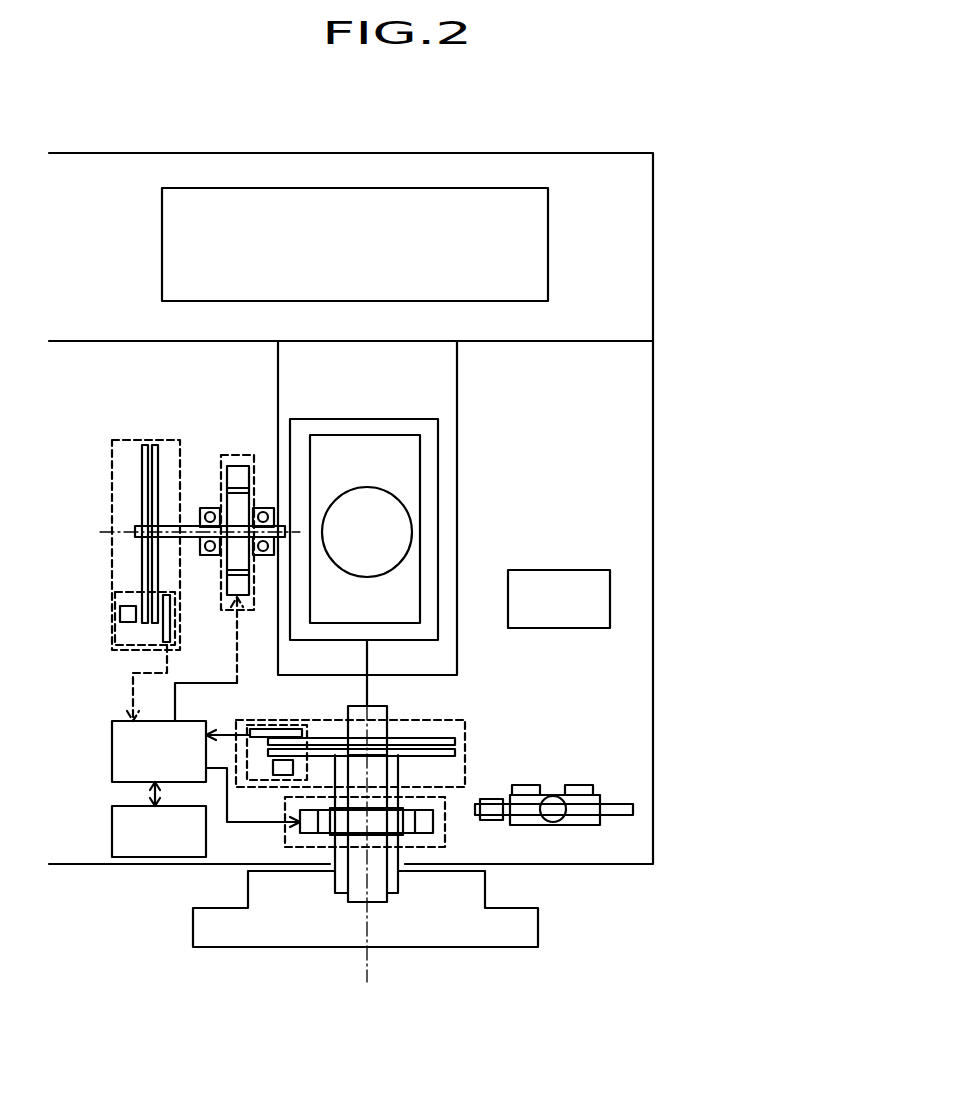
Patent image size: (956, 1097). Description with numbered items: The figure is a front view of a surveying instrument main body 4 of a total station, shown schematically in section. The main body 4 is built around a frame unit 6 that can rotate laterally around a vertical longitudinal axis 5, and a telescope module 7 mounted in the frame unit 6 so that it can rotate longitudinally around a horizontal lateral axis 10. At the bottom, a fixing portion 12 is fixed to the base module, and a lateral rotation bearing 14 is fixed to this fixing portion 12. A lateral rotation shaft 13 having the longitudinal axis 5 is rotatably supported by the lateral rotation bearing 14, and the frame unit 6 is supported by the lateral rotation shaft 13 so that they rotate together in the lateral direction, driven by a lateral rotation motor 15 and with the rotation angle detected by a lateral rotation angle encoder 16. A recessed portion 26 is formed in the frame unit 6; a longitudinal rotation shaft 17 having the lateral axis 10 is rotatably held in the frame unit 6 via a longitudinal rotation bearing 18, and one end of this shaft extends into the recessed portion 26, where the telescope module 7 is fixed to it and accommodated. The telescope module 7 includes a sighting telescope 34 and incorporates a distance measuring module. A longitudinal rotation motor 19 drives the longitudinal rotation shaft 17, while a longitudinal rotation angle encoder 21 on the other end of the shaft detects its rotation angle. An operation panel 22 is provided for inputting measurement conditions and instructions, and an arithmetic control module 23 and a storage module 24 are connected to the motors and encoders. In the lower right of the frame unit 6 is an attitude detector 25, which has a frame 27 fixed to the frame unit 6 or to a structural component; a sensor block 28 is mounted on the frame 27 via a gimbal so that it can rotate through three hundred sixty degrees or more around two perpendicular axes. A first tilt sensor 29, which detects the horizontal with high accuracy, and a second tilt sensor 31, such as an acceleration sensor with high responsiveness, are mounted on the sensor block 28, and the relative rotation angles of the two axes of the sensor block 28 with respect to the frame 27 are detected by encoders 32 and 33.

The surveying instrument main body 4 is at (665, 543).
The longitudinal axis 5 is at (365, 688).
The frame unit 6 is at (653, 420).
The telescope module 7 is at (400, 418).
The lateral axis 10 is at (120, 530).
The fixing portion 12 is at (538, 925).
The lateral rotation shaft 13 is at (388, 730).
The lateral rotation bearing 14 is at (397, 880).
The lateral rotation motor 15 is at (285, 835).
The lateral rotation angle encoder 16 is at (465, 722).
The longitudinal rotation shaft 17 is at (282, 540).
The longitudinal rotation bearing 18 is at (208, 508).
The longitudinal rotation motor 19 is at (237, 455).
The longitudinal rotation angle encoder 21 is at (133, 440).
The operation panel 22 is at (555, 570).
The arithmetic control module 23 is at (112, 748).
The storage module 24 is at (112, 827).
The attitude detector 25 is at (586, 767).
The recessed portion 26 is at (290, 384).
The frame 27 is at (625, 815).
The sensor block 28 is at (587, 825).
The first tilt sensor 29 is at (530, 785).
The second tilt sensor 31 is at (590, 785).
The encoder 32 is at (540, 820).
The encoder 33 is at (492, 800).
The sighting telescope 34 is at (385, 487).